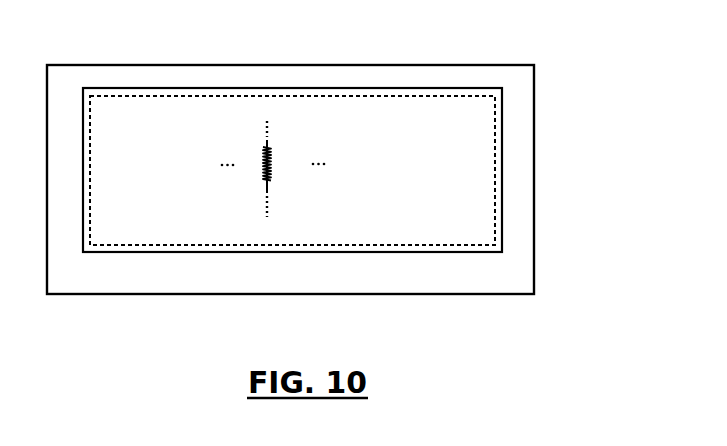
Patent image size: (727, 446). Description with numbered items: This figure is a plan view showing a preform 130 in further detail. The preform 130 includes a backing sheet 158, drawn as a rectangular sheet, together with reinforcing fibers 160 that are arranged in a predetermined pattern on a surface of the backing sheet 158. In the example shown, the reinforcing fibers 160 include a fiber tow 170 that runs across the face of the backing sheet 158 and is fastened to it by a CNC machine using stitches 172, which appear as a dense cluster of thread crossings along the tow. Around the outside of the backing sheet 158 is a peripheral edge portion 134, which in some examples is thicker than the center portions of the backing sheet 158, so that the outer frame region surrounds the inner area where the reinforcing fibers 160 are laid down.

The preform 130 is at (576, 109).
The peripheral edge portion 134 is at (520, 177).
The backing sheet 158 is at (398, 132).
The reinforcing fibers 160 is at (292, 149).
The fiber tow 170 is at (268, 187).
The stitches 172 is at (271, 164).